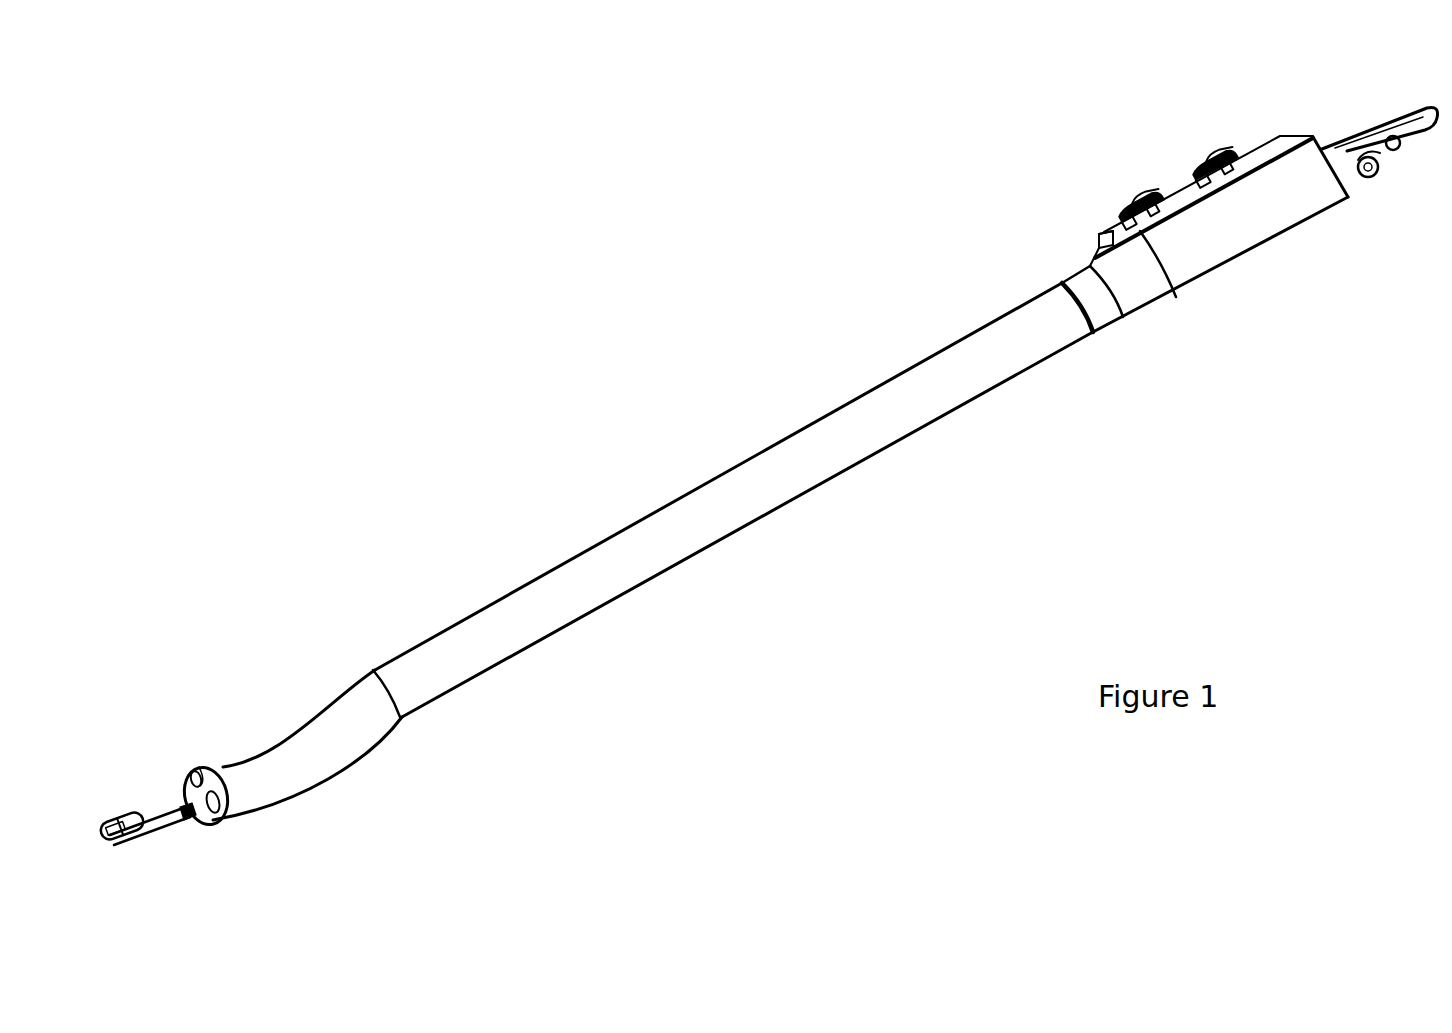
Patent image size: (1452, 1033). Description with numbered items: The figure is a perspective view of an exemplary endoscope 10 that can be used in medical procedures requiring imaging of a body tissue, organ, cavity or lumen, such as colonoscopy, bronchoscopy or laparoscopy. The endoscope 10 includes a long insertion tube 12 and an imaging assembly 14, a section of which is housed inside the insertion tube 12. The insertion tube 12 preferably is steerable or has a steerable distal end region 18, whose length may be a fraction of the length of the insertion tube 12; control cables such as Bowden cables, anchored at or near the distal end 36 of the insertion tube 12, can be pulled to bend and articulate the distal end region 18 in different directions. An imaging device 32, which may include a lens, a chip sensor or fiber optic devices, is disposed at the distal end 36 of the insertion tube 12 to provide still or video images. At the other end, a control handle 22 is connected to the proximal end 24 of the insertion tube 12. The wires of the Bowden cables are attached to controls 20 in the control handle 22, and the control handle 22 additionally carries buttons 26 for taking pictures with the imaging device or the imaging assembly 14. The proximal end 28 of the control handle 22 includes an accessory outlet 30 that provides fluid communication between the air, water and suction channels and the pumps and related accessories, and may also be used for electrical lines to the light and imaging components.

The endoscope 10 is at (553, 373).
The insertion tube 12 is at (711, 512).
The imaging assembly 14 is at (166, 849).
The distal end region 18 is at (305, 735).
The controls 20 is at (1212, 160).
The control handle 22 is at (1197, 246).
The proximal end of the insertion tube 24 is at (1083, 323).
The buttons 26 is at (1100, 238).
The proximal end of the control handle 28 is at (1348, 198).
The accessory outlet 30 is at (1350, 138).
The imaging device 32 is at (199, 766).
The distal end of the insertion tube 36 is at (187, 775).